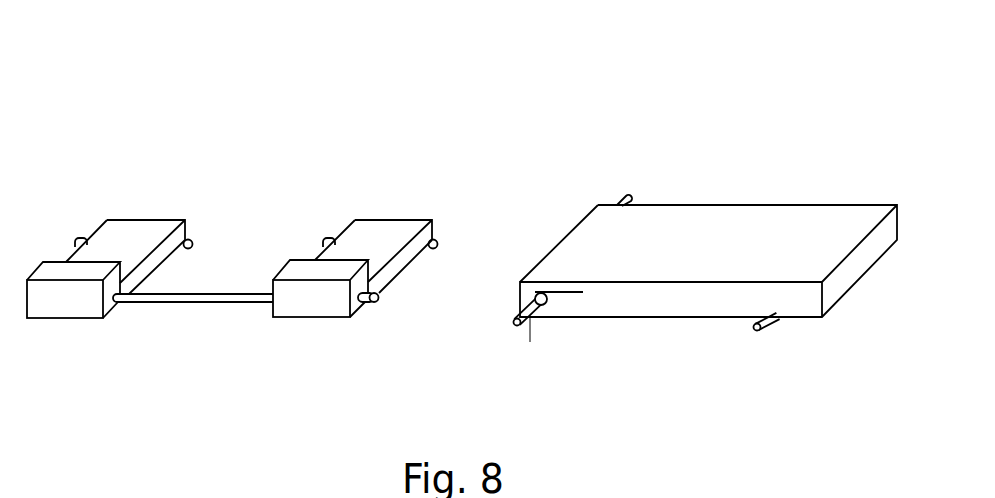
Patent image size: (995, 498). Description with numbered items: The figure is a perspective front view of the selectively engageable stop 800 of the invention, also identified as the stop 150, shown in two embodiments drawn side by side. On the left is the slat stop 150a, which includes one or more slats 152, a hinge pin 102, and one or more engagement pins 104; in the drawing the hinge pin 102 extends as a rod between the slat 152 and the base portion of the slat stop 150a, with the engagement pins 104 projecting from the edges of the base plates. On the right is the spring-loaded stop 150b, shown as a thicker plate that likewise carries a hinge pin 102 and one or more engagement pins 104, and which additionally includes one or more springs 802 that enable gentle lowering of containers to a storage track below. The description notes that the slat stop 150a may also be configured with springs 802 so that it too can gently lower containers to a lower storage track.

The selectively engageable stop 800 is at (68, 62).
The selectively engageable stop 150 is at (462, 205).
The slat stop 150a is at (135, 220).
The spring-loaded stop 150b is at (723, 205).
The engagement pin 104 is at (193, 245).
The hinge pin 102 is at (252, 303).
The slat 152 is at (335, 318).
The spring 802 is at (533, 292).